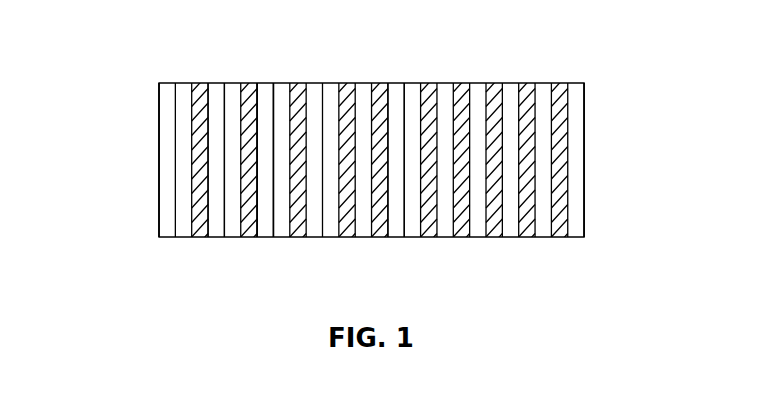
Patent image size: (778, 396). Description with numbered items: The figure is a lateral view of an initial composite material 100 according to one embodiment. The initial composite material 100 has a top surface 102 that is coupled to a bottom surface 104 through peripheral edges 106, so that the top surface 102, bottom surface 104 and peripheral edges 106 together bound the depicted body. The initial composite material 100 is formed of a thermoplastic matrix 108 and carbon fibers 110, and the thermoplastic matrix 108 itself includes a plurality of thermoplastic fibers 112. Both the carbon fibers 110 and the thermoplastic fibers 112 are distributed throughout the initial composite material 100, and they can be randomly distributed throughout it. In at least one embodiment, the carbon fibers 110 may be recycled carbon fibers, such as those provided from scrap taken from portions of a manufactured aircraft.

The initial composite material 100 is at (133, 68).
The top surface 102 is at (294, 86).
The bottom surface 104 is at (266, 237).
The peripheral edges 106 is at (160, 160).
The thermoplastic matrix 108 is at (462, 80).
The carbon fibers 110 is at (218, 86).
The thermoplastic fibers 112 is at (200, 86).